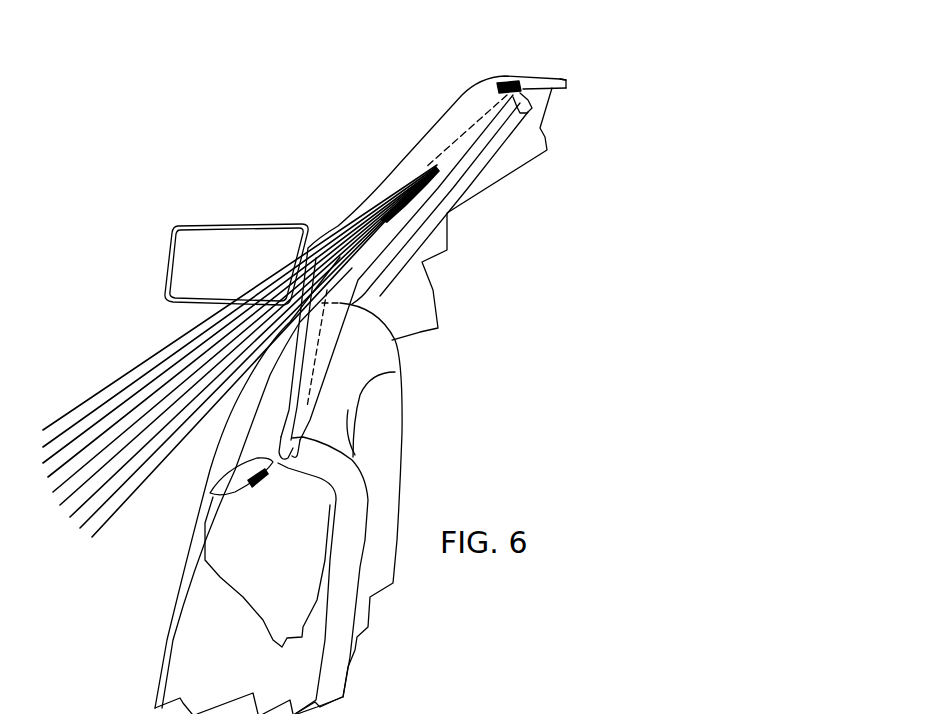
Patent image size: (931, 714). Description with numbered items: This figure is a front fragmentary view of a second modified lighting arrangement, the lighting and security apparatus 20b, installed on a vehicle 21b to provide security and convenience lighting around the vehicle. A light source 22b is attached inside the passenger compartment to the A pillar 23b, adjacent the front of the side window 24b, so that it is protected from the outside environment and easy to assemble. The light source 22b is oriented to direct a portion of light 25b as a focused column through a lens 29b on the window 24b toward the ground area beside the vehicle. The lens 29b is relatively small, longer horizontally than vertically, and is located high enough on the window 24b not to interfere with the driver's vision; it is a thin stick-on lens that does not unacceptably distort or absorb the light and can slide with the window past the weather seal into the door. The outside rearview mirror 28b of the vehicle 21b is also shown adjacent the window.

The lighting and security apparatus 20b is at (480, 196).
The vehicle 21b is at (568, 80).
The light source 22b is at (432, 134).
The A pillar 23b is at (477, 93).
The side window 24b is at (485, 148).
The portion of light 25b is at (413, 173).
The outside rearview mirror 28b is at (172, 240).
The lens 29b is at (412, 205).